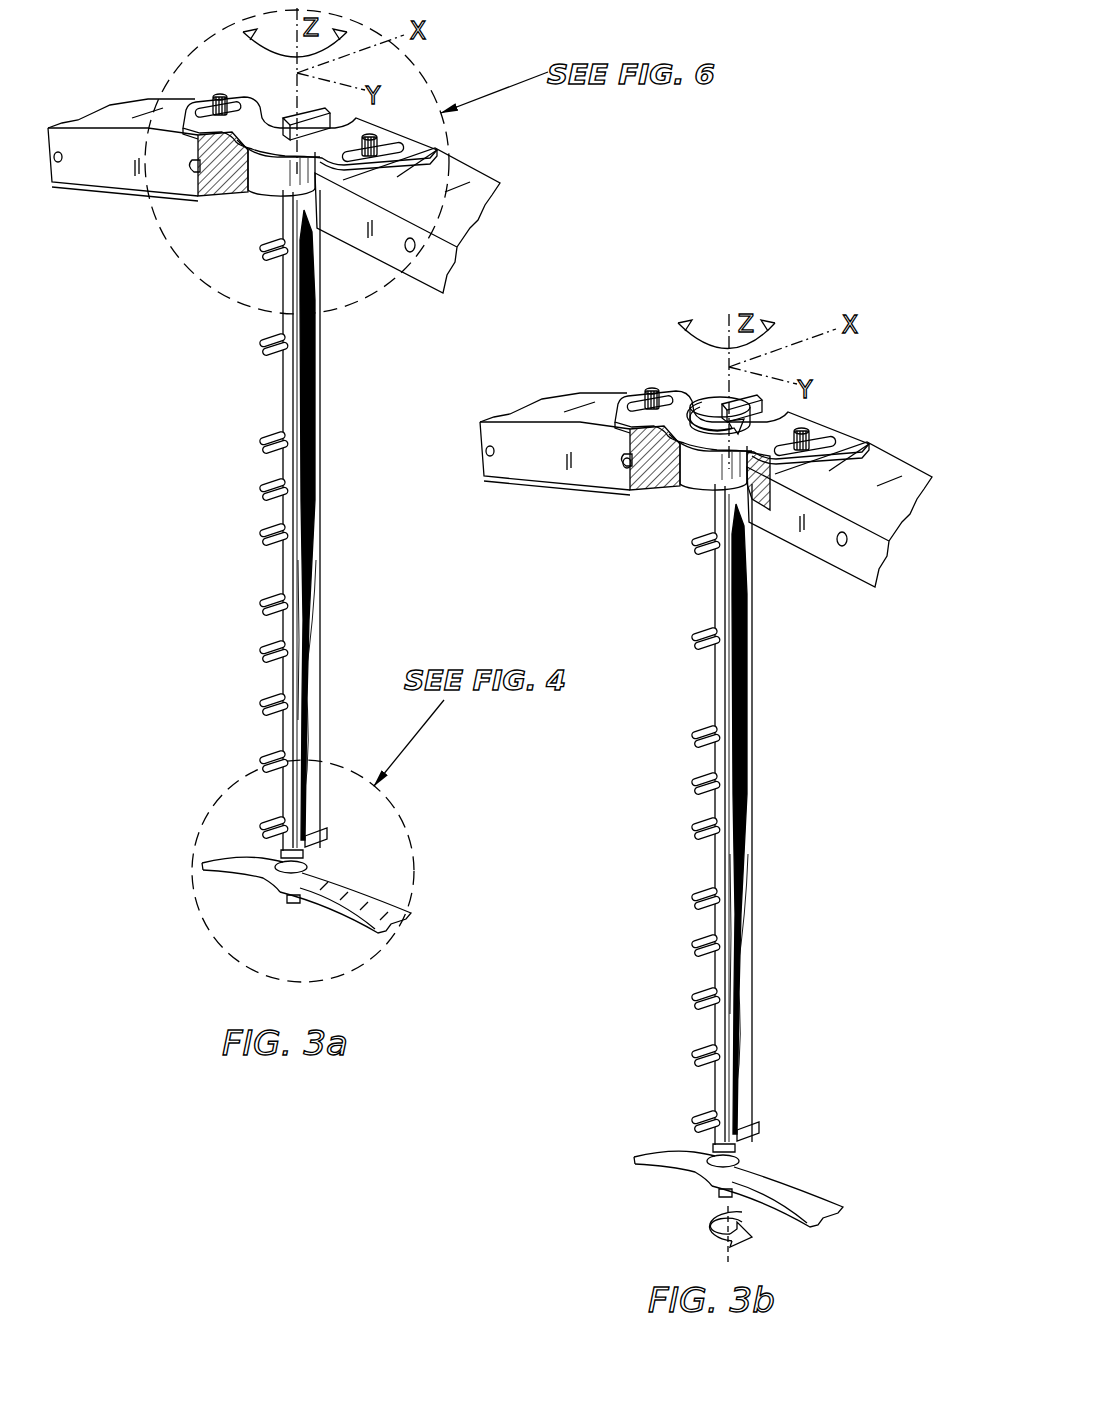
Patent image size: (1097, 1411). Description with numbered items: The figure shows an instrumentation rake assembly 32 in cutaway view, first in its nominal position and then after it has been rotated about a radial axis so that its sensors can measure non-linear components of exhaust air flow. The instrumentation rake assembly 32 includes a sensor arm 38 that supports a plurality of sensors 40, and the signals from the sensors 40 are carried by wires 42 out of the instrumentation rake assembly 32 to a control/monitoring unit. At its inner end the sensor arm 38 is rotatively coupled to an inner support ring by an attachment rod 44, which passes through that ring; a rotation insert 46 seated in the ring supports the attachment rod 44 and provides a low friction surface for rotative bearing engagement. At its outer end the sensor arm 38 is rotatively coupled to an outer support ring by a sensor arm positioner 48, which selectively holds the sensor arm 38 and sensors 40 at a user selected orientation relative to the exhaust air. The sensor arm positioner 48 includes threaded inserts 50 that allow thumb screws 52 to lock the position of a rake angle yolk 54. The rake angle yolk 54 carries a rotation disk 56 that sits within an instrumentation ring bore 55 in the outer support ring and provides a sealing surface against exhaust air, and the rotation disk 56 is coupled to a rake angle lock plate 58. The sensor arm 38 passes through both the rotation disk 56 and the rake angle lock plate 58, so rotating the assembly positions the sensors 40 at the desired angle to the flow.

In FIG. 3a, the instrumentation rake assembly 32 is at (95, 107).
In FIG. 3b, the instrumentation rake assembly 32 is at (701, 444).
In FIG. 3a, the sensor arm 38 is at (287, 282).
In FIG. 3b, the sensor arm 38 is at (642, 818).
In FIG. 3a, the sensors 40 is at (252, 354).
In FIG. 3b, the sensors 40 is at (645, 832).
In FIG. 3a, the wires 42 is at (320, 468).
In FIG. 3b, the wires 42 is at (778, 818).
In FIG. 3a, the attachment rod 44 is at (313, 870).
In FIG. 3b, the attachment rod 44 is at (764, 1170).
In FIG. 3a, the rotation insert 46 is at (281, 872).
In FIG. 3b, the rotation insert 46 is at (657, 1228).
In FIG. 3a, the sensor arm positioner 48 is at (352, 118).
In FIG. 3b, the sensor arm positioner 48 is at (761, 432).
In FIG. 3a, the threaded inserts 50 is at (202, 98).
In FIG. 3b, the threaded inserts 50 is at (606, 361).
In FIG. 3a, the thumb screws 52 is at (392, 147).
In FIG. 3b, the thumb screws 52 is at (877, 430).
In FIG. 3a, the rake angle yolk 54 is at (234, 187).
In FIG. 3b, the rake angle yolk 54 is at (622, 495).
In FIG. 3a, the instrumentation ring bore 55 is at (203, 156).
In FIG. 3b, the instrumentation ring bore 55 is at (579, 444).
In FIG. 3a, the rotation disk 56 is at (270, 172).
In FIG. 3b, the rotation disk 56 is at (695, 500).
In FIG. 3a, the rake angle lock plate 58 is at (270, 141).
In FIG. 3b, the rake angle lock plate 58 is at (714, 393).